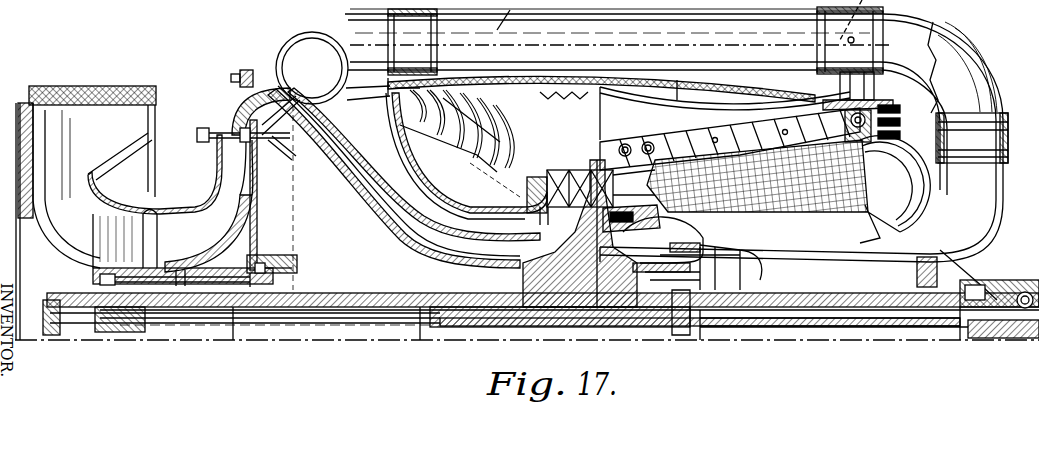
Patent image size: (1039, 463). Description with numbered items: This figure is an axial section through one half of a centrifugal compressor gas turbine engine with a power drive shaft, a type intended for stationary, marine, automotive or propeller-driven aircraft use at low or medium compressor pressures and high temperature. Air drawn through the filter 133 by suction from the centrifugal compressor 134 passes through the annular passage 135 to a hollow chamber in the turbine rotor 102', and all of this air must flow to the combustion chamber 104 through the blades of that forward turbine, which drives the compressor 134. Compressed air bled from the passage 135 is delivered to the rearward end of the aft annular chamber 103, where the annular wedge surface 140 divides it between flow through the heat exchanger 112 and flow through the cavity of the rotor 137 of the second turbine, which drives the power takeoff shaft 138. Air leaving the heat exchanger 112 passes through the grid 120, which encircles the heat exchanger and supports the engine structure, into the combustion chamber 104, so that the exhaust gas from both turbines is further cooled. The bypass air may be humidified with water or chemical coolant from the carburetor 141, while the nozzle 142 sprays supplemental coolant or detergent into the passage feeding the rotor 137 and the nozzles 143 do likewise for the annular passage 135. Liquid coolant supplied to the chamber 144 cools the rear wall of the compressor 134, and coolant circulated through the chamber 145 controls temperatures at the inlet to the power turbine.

The filter 133 is at (100, 86).
The centrifugal compressor 134 is at (227, 240).
The chamber 144 is at (330, 227).
The nozzles 143 is at (378, 200).
The chamber 145 is at (502, 230).
The annular passage 135 is at (503, 260).
The combustion chamber 104 is at (570, 130).
The grid 120 is at (755, 127).
The carburetor 141 is at (882, 80).
The heat exchanger 112 is at (748, 200).
The chamber 103 is at (833, 238).
The rotor 137 is at (604, 263).
The turbine rotor 102' is at (580, 262).
The nozzle 142 is at (678, 337).
The annular wedge surface 140 is at (680, 232).
The power takeoff shaft 138 is at (878, 323).